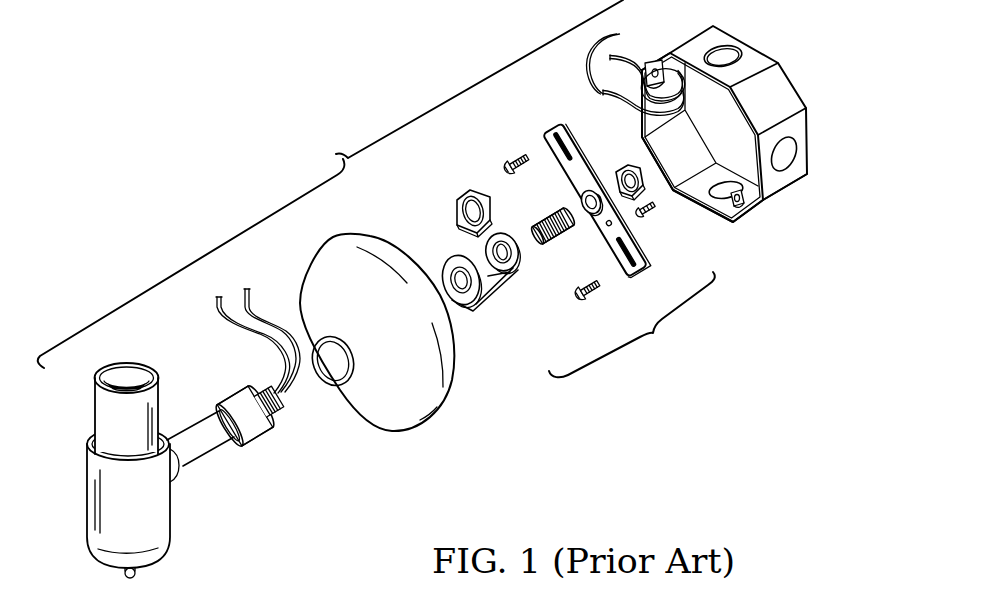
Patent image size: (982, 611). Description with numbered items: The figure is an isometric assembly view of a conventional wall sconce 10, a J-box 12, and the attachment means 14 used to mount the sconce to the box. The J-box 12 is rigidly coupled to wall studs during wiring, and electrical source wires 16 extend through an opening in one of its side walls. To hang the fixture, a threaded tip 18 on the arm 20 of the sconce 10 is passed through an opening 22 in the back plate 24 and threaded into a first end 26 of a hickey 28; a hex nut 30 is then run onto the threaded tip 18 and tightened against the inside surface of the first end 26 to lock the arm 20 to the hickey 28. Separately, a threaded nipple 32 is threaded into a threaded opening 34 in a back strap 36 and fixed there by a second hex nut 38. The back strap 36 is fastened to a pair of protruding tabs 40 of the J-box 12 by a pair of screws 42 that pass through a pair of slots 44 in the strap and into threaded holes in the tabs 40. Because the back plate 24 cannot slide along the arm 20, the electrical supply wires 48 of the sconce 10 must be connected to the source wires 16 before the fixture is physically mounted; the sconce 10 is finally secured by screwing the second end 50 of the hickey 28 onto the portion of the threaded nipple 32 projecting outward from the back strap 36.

The sconce 10 is at (236, 503).
The J-box 12 is at (764, 206).
The attachment means 14 is at (655, 336).
The electrical source wires 16 is at (617, 56).
The threaded tip 18 is at (276, 413).
The arm 20 is at (216, 450).
The opening 22 is at (322, 350).
The back plate 24 is at (418, 428).
The first end 26 is at (447, 273).
The hickey 28 is at (495, 304).
The hex nut 30 is at (468, 190).
The threaded nipple 32 is at (570, 226).
The threaded opening 34 is at (580, 203).
The back strap 36 is at (643, 229).
The hex nut 38 is at (630, 166).
The protruding tabs 40 is at (661, 60).
The screws 42 is at (516, 154).
The slots 44 is at (547, 127).
The electrical supply wires 48 is at (248, 289).
The second end 50 is at (517, 253).